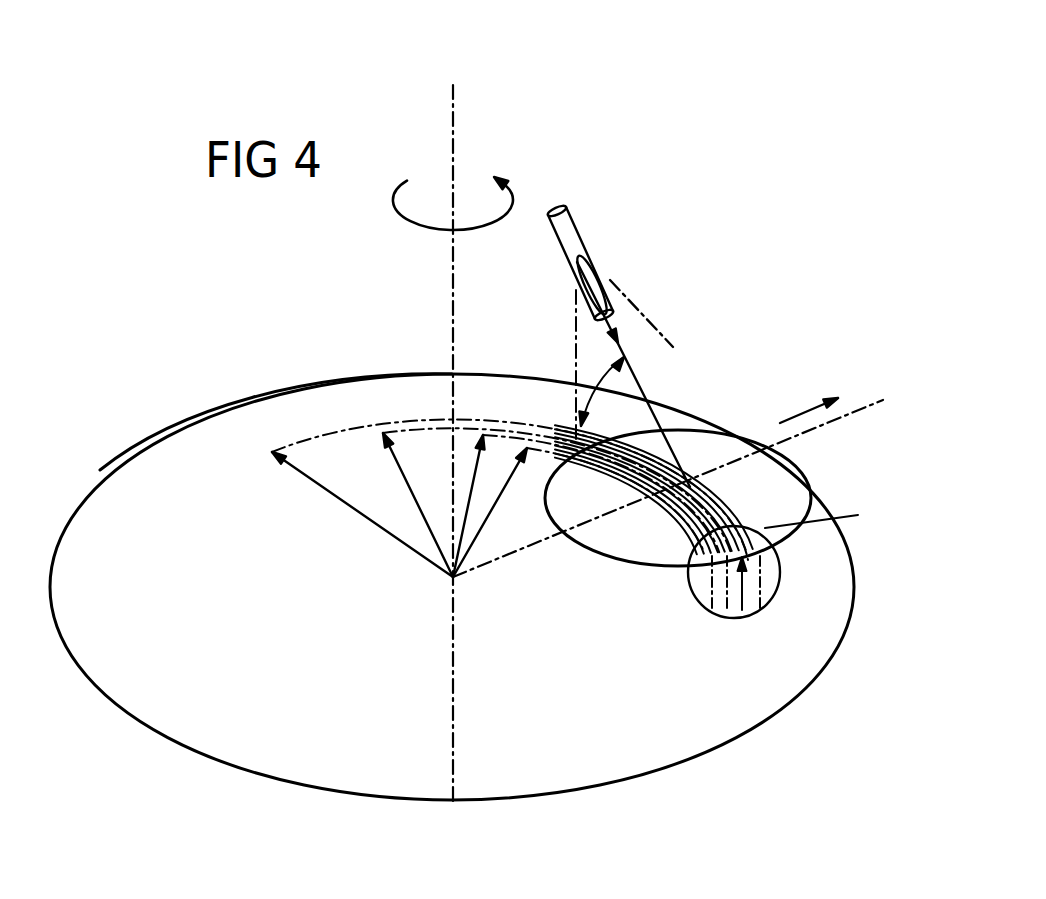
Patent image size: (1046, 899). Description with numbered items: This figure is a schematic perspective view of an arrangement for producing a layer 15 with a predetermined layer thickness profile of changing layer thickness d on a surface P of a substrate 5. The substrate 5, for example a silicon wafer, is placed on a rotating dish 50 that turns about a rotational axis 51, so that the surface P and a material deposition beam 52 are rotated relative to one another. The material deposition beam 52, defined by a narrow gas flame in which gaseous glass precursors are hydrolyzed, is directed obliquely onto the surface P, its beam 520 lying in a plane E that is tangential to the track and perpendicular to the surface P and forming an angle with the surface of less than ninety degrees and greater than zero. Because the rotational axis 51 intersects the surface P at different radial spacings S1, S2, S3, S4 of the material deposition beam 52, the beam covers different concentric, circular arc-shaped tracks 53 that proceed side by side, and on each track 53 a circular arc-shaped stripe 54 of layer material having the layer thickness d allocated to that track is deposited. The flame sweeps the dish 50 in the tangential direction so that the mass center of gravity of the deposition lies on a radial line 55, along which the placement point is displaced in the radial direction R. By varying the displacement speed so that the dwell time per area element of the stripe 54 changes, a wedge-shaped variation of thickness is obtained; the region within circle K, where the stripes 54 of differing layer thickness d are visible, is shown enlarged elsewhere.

The substrate 5 is at (823, 501).
The rotating dish 50 is at (233, 423).
The rotational axis 51 is at (453, 137).
The material deposition beam 52 is at (600, 322).
The beam 520 is at (660, 373).
The layer 15 is at (700, 478).
The tracks 53 is at (692, 597).
The stripe 54 is at (678, 512).
The radial line 55 is at (875, 402).
The plane E is at (606, 290).
The radial direction R is at (803, 413).
The surface P is at (810, 471).
The circle K is at (780, 571).
The layer thickness d is at (820, 516).
The radial spacing S1 is at (507, 494).
The radial spacing S2 is at (470, 514).
The radial spacing S3 is at (407, 488).
The radial spacing S4 is at (328, 494).